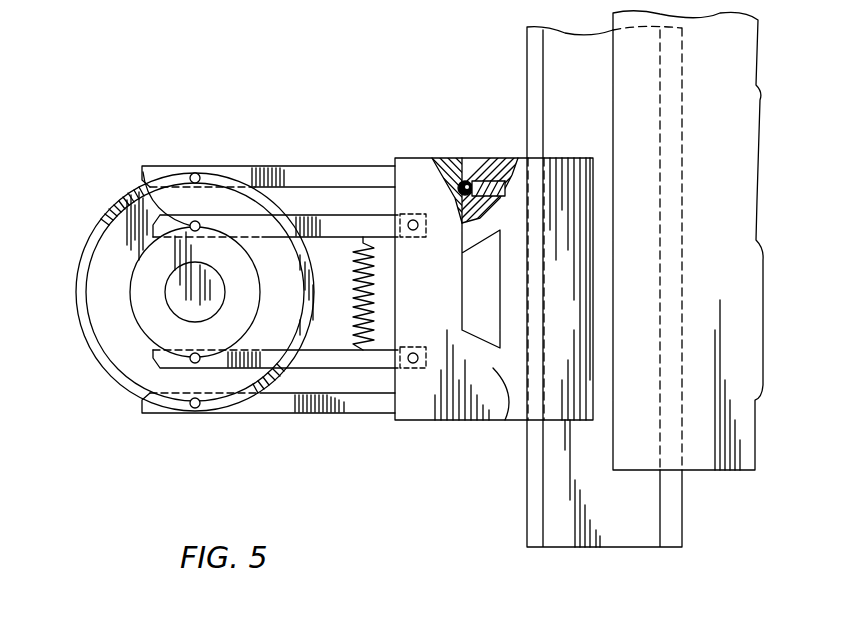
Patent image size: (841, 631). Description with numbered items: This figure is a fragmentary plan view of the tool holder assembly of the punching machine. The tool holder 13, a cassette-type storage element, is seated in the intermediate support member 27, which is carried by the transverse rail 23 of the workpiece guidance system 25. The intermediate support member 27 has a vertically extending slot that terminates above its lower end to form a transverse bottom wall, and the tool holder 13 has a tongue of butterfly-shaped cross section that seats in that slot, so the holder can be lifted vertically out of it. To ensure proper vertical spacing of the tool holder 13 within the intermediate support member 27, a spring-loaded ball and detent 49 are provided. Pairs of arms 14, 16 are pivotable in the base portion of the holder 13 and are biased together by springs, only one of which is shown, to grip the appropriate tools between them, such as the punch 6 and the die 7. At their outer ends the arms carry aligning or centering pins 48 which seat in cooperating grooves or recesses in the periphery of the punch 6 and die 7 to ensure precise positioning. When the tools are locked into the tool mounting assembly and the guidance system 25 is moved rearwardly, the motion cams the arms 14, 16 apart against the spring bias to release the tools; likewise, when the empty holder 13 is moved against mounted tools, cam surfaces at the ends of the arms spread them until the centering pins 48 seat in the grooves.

The die 7 is at (118, 290).
The punch 6 is at (163, 323).
The centering pins 48 is at (145, 200).
The arms 16 is at (303, 175).
The arms 14 is at (277, 358).
The tool holder 13 is at (413, 172).
The spring-loaded ball and detent 49 is at (477, 173).
The intermediate support member 27 is at (508, 422).
The transverse rail 23 is at (553, 515).
The workpiece guidance system 25 is at (707, 444).